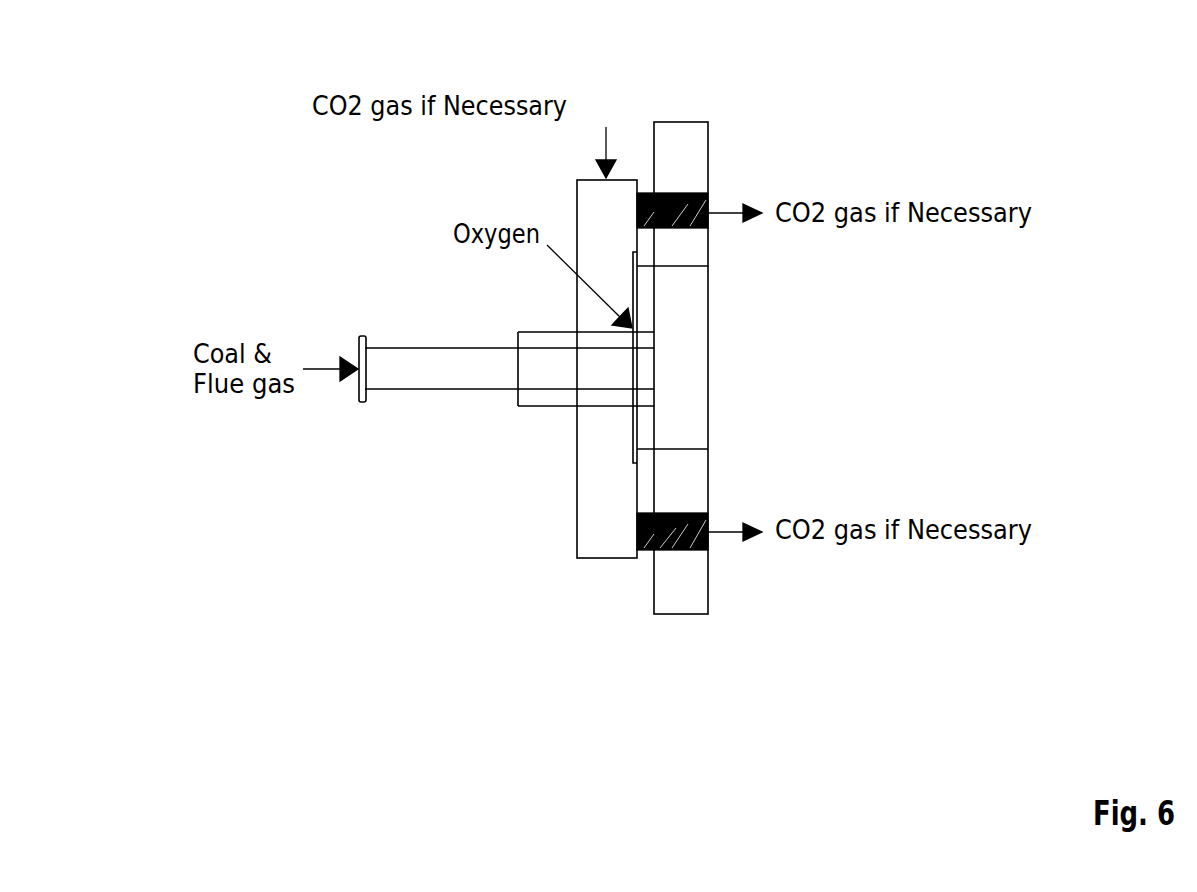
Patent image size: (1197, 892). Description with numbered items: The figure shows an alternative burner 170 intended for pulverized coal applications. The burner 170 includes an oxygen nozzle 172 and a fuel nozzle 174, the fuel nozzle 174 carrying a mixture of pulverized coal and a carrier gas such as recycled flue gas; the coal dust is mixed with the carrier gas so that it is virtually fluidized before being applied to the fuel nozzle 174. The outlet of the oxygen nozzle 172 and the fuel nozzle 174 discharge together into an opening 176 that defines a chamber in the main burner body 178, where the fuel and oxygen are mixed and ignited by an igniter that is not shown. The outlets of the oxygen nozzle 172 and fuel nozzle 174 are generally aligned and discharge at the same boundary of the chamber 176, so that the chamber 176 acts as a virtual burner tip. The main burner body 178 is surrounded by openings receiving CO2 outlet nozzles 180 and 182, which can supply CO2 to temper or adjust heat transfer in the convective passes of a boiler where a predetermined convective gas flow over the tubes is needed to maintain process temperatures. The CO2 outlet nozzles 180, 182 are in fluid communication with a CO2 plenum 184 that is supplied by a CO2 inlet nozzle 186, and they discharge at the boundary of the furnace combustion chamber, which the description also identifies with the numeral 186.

The burner 170 is at (674, 91).
The oxygen nozzle 172 is at (523, 330).
The fuel nozzle 174 is at (387, 348).
The opening 176 is at (689, 366).
The main burner body 178 is at (687, 122).
The CO2 outlet nozzle 180 is at (692, 193).
The CO2 outlet nozzle 182 is at (693, 513).
The CO2 plenum 184 is at (576, 501).
The CO2 inlet nozzle 186 is at (709, 421).